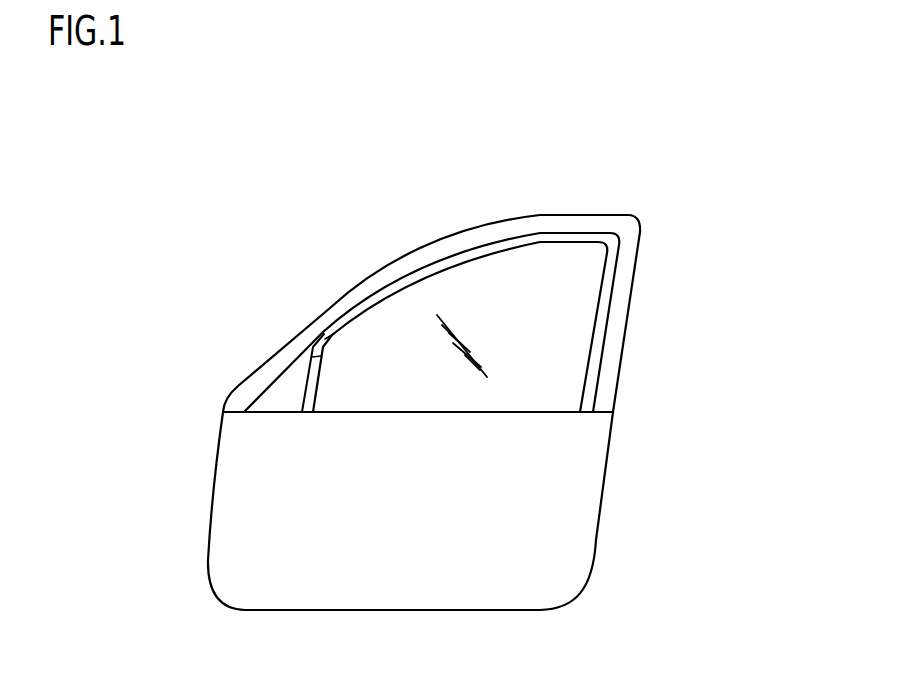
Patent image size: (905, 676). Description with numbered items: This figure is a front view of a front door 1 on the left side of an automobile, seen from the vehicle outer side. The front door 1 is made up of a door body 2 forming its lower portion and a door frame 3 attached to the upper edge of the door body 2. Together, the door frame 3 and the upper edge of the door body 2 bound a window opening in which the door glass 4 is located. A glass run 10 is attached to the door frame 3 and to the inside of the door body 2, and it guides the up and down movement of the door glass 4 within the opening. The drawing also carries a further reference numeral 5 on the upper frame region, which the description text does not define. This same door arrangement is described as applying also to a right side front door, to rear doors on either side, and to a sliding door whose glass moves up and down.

The front door 1 is at (646, 255).
The door body 2 is at (573, 517).
The door frame 3 is at (350, 298).
The door glass 4 is at (572, 297).
The upper sash of door frame 5 is at (455, 245).
The glass run 10 is at (550, 247).